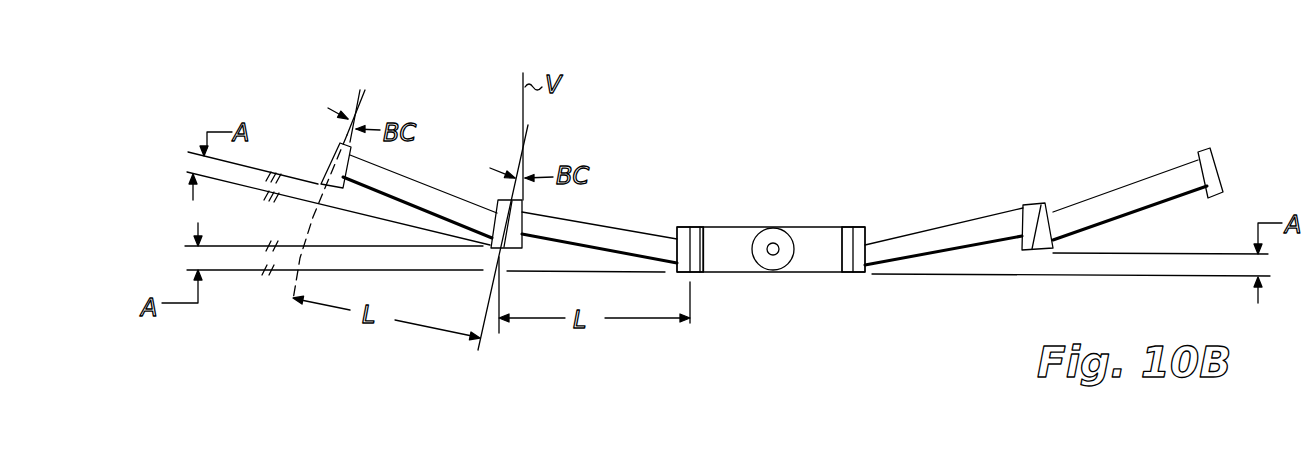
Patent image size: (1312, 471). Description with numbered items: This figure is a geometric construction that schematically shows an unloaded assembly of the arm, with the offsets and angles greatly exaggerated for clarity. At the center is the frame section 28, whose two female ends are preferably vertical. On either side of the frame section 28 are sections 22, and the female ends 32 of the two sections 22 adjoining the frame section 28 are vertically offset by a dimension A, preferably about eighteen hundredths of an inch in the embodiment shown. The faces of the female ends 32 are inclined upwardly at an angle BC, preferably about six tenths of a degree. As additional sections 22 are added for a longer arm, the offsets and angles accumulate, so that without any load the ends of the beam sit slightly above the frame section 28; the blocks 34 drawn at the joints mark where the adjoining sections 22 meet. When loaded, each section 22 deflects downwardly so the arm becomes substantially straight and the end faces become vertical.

The section 22 is at (633, 193).
The frame section 28 is at (728, 245).
The female end 32 is at (334, 169).
The pivot block 34 is at (684, 233).